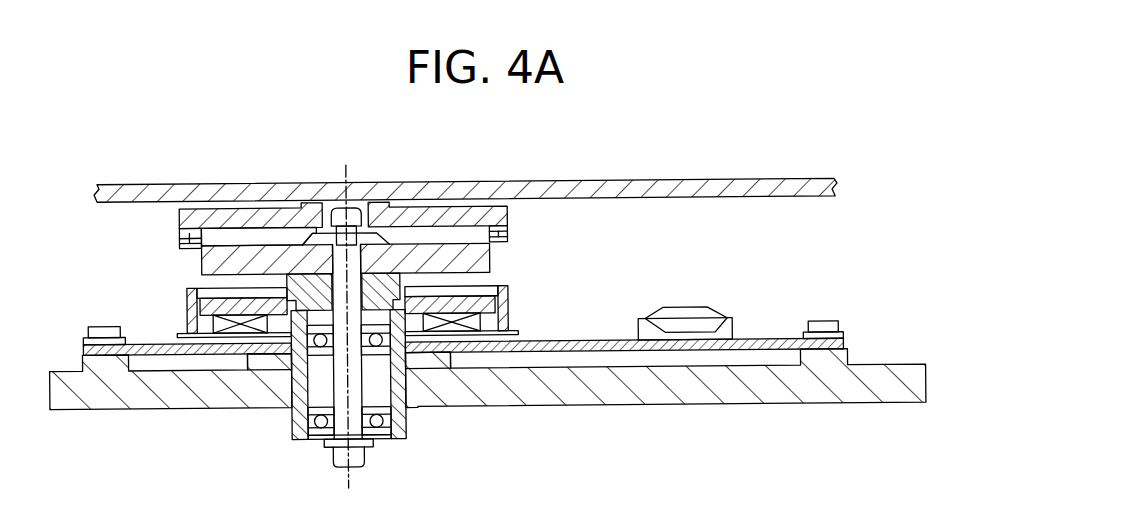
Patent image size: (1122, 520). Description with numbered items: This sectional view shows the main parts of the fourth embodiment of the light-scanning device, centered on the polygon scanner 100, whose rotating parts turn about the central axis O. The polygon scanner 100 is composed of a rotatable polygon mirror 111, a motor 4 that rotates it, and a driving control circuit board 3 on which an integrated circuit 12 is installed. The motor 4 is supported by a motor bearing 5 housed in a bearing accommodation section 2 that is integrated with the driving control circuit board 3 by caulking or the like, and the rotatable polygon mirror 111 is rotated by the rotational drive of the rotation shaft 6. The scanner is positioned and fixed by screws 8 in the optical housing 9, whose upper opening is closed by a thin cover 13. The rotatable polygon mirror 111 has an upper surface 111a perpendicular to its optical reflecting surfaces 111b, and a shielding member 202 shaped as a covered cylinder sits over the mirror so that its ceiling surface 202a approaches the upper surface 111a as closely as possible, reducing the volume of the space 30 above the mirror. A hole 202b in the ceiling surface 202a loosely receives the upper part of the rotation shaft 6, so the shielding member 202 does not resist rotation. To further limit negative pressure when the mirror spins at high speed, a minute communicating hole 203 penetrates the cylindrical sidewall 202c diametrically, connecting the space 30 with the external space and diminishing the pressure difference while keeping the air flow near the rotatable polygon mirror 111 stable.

The polygon scanner 100 is at (637, 231).
The cover 13 is at (541, 191).
The shielding member 202 is at (346, 195).
The ceiling surface 202a is at (408, 210).
The hole 202b is at (330, 201).
The cylindrical sidewall 202c is at (182, 230).
The minute communicating hole 203 is at (182, 241).
The space 30 is at (220, 231).
The rotatable polygon mirror 111 is at (331, 288).
The upper surface 111a is at (453, 233).
The optical reflecting surfaces 111b is at (202, 262).
The motor 4 is at (168, 300).
The driving control circuit board 3 is at (588, 340).
The integrated circuit 12 is at (693, 312).
The screws 8 is at (102, 324).
The optical housing 9 is at (720, 400).
The bearing accommodation section 2 is at (427, 363).
The motor bearing 5 is at (312, 386).
The rotation shaft 6 is at (362, 449).
The central axis O is at (348, 164).